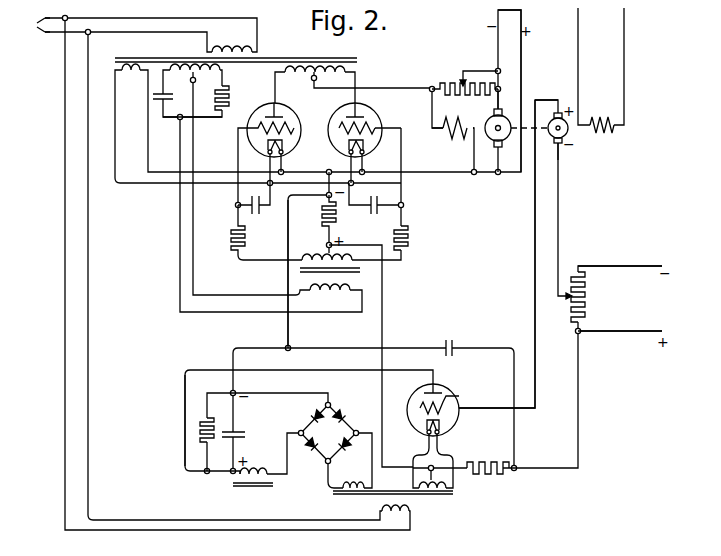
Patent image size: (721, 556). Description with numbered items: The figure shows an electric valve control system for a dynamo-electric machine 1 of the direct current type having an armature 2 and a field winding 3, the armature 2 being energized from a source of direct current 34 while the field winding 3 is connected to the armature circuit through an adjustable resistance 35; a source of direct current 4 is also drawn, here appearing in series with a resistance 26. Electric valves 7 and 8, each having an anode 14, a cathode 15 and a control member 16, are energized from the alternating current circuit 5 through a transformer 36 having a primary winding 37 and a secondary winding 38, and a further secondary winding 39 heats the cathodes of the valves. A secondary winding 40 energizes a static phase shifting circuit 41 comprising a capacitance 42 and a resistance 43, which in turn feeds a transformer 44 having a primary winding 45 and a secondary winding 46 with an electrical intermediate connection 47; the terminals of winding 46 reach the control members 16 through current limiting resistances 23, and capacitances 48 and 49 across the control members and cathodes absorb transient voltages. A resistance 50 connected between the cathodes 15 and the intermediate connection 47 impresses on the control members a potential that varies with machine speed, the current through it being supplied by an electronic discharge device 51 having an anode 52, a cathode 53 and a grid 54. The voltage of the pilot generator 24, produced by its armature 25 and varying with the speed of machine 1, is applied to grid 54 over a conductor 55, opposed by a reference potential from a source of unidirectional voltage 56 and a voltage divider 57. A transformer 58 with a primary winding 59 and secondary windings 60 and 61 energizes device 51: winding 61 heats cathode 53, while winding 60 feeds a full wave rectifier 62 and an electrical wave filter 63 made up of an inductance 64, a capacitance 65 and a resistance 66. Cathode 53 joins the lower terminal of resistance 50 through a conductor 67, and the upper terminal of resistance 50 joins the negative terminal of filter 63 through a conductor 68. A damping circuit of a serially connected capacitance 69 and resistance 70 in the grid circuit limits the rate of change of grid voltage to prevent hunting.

The dynamo-electric machine 1 is at (486, 161).
The armature 2 is at (488, 119).
The field winding 3 is at (447, 141).
The source of direct current 4 is at (620, 28).
The alternating current circuit 5 is at (33, 26).
The electric valve 7 is at (284, 133).
The electric valve 8 is at (377, 112).
The anode 14 is at (280, 110).
The cathode 15 is at (288, 148).
The control member 16 is at (292, 126).
The current limiting resistance 23 is at (232, 248).
The pilot generator 24 is at (591, 159).
The armature 25 is at (554, 140).
The resistor 26 is at (598, 118).
The source of direct current 34 is at (523, 18).
The adjustable resistance 35 is at (465, 76).
The transformer 36 is at (358, 60).
The primary winding 37 is at (235, 42).
The secondary winding 38 is at (348, 72).
The secondary winding 39 is at (129, 81).
The secondary winding 40 is at (222, 70).
The phase shifting circuit 41 is at (215, 139).
The capacitance 42 is at (178, 101).
The resistance 43 is at (229, 108).
The transformer 44 is at (366, 272).
The primary winding 45 is at (330, 297).
The secondary winding 46 is at (315, 259).
The electrical intermediate connection 47 is at (336, 250).
The capacitance 48 is at (258, 215).
The capacitance 49 is at (375, 197).
The resistance 50 is at (338, 223).
The electronic discharge device 51 is at (436, 404).
The anode 52 is at (437, 391).
The cathode 53 is at (446, 424).
The grid 54 is at (421, 403).
The conductor 55 is at (534, 265).
The source of unidirectional voltage 56 is at (637, 266).
The voltage divider 57 is at (587, 290).
The transformer 58 is at (456, 494).
The primary winding 59 is at (413, 512).
The secondary winding 60 is at (336, 491).
The secondary winding 61 is at (453, 483).
The rectifier 62 is at (337, 439).
The electrical wave filter 63 is at (177, 446).
The inductance 64 is at (233, 483).
The capacitance 65 is at (246, 434).
The resistance 66 is at (205, 415).
The conductor 67 is at (384, 325).
The conductor 68 is at (287, 330).
The capacitance 69 is at (449, 340).
The resistance 70 is at (483, 462).